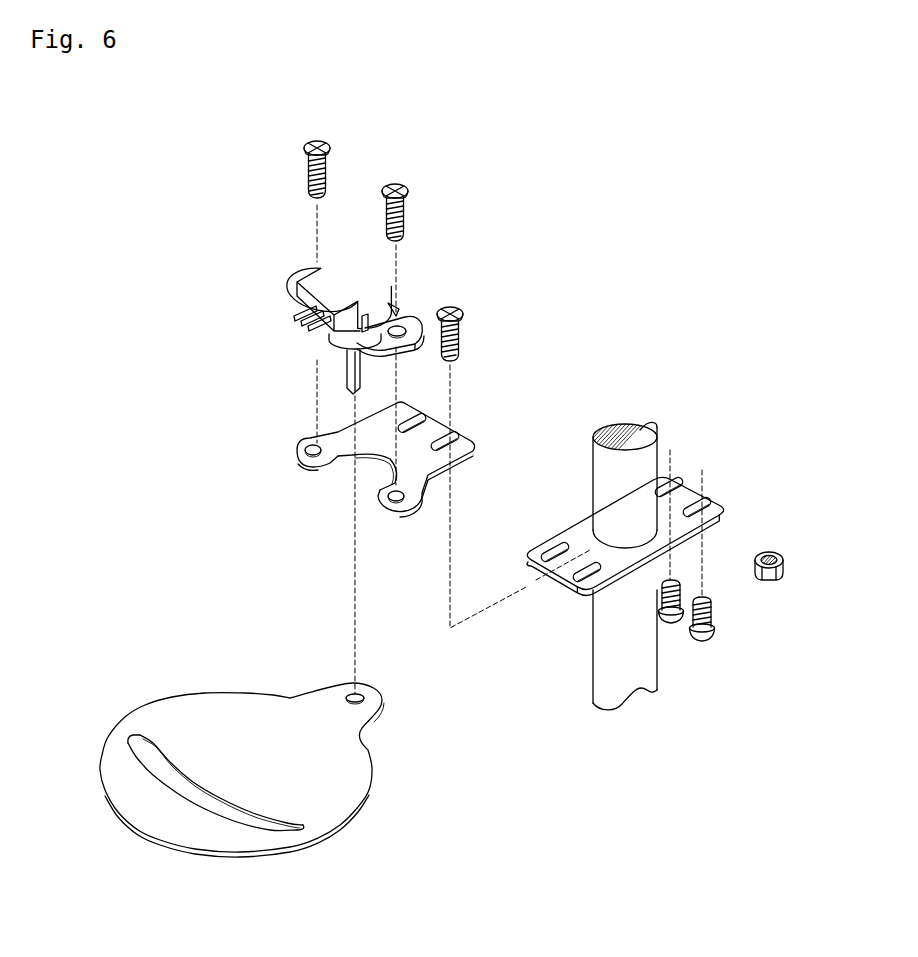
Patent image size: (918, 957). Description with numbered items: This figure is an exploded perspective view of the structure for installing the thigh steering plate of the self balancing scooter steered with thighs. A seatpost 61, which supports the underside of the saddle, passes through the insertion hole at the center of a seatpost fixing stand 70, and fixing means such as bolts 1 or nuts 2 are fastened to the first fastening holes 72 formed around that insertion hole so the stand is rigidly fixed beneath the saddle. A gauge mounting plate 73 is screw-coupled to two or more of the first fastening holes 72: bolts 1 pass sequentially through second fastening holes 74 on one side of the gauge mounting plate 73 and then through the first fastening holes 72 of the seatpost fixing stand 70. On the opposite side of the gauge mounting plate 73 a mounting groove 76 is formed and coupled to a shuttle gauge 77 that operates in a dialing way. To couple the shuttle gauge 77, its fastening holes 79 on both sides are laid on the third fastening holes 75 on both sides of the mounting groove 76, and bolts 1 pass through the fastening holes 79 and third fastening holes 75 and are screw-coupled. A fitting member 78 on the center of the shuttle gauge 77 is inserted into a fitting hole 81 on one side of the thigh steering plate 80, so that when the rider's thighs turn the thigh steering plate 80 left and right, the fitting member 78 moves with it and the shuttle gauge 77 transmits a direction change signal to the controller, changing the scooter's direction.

The bolt 1 is at (406, 214).
The nut 2 is at (784, 567).
The seatpost 61 is at (616, 424).
The seatpost fixing stand 70 is at (640, 532).
The first fastening hole 72 is at (589, 563).
The gauge mounting plate 73 is at (394, 452).
The second fastening hole 74 is at (450, 436).
The third fastening hole 75 is at (311, 446).
The mounting groove 76 is at (343, 476).
The shuttle gauge 77 is at (351, 270).
The fitting member 78 is at (346, 377).
The fastening hole 79 is at (402, 324).
The thigh steering plate 80 is at (242, 752).
The fitting hole 81 is at (357, 694).